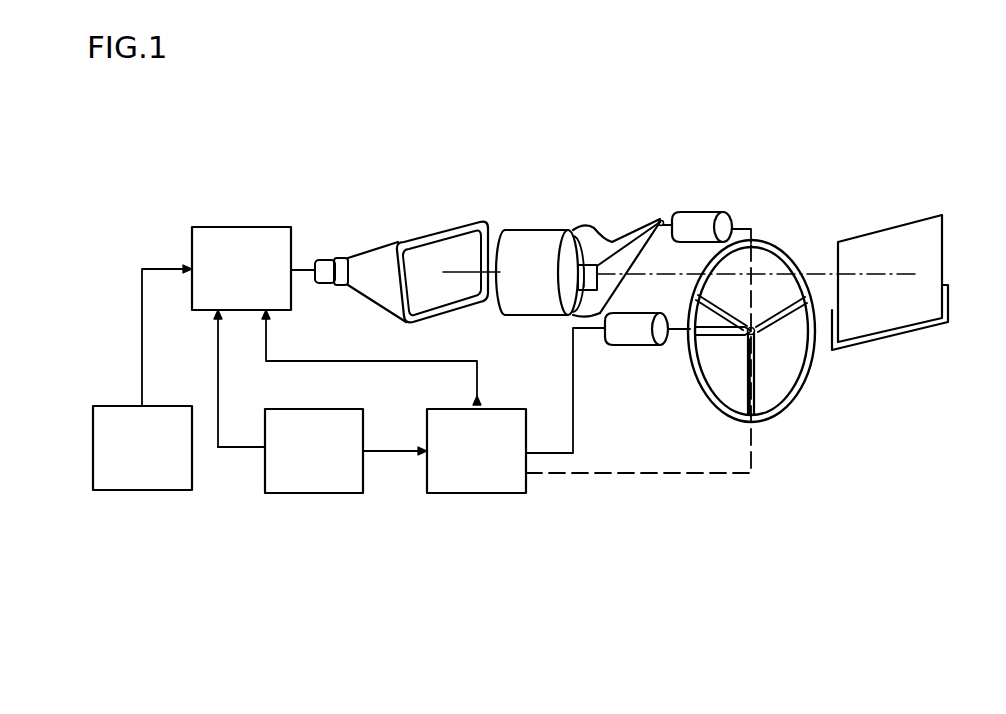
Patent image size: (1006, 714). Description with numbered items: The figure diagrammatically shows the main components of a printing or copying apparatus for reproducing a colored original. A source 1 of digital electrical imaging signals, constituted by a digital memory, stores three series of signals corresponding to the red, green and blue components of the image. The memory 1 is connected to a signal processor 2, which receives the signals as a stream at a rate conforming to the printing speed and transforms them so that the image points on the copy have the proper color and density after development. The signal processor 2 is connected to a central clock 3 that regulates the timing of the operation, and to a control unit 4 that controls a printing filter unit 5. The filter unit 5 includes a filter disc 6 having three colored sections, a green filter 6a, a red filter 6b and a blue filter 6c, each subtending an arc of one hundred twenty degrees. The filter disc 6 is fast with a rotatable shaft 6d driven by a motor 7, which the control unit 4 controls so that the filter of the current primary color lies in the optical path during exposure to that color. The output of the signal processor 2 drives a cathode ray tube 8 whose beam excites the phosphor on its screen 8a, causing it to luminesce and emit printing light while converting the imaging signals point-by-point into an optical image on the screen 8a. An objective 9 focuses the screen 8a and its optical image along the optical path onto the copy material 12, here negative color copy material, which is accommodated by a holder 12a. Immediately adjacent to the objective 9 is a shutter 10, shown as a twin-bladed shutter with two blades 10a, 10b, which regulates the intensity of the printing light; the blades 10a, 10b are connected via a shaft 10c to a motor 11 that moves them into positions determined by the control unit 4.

The source of digital electrical imaging signals 1 is at (158, 488).
The signal processor 2 is at (246, 236).
The central clock 3 is at (330, 490).
The control unit 4 is at (490, 490).
The printing filter unit 5 is at (803, 323).
The filter disc 6 is at (757, 418).
The green filter section 6a is at (797, 357).
The red filter section 6b is at (723, 390).
The blue filter section 6c is at (768, 260).
The rotatable shaft 6d is at (678, 340).
The motor 7 is at (631, 343).
The cathode ray tube 8 is at (401, 239).
The screen 8a is at (425, 247).
The objective 9 is at (535, 235).
The shutter 10 is at (654, 229).
The shutter blade 10a is at (617, 240).
The shutter blade 10b is at (620, 283).
The shaft 10c is at (661, 218).
The motor 11 is at (713, 217).
The copy material 12 is at (893, 238).
The holder 12a is at (948, 312).